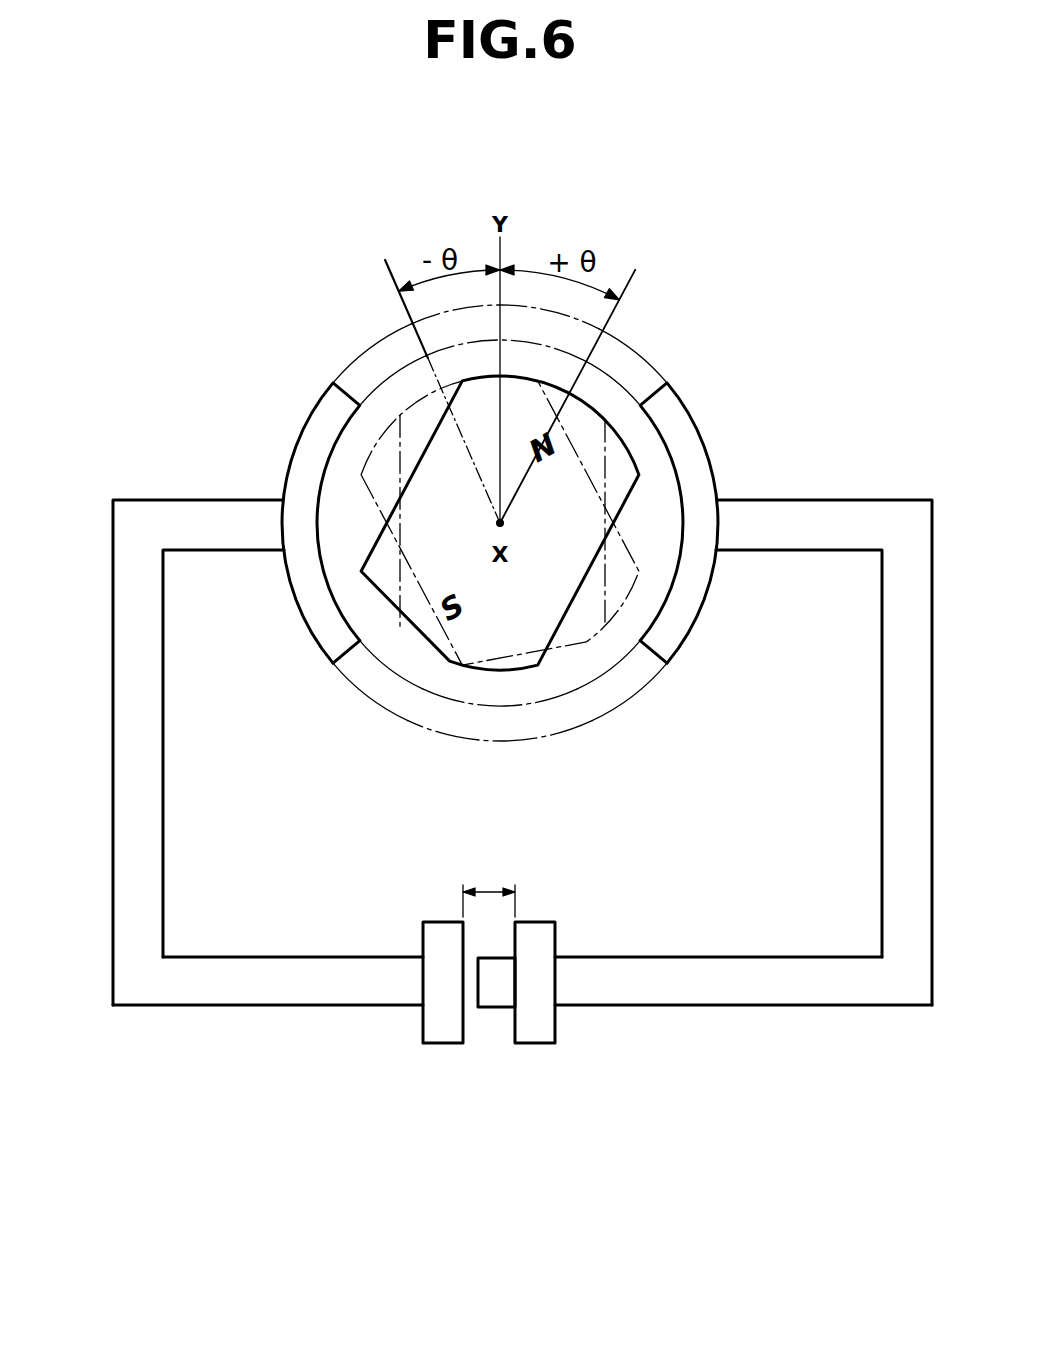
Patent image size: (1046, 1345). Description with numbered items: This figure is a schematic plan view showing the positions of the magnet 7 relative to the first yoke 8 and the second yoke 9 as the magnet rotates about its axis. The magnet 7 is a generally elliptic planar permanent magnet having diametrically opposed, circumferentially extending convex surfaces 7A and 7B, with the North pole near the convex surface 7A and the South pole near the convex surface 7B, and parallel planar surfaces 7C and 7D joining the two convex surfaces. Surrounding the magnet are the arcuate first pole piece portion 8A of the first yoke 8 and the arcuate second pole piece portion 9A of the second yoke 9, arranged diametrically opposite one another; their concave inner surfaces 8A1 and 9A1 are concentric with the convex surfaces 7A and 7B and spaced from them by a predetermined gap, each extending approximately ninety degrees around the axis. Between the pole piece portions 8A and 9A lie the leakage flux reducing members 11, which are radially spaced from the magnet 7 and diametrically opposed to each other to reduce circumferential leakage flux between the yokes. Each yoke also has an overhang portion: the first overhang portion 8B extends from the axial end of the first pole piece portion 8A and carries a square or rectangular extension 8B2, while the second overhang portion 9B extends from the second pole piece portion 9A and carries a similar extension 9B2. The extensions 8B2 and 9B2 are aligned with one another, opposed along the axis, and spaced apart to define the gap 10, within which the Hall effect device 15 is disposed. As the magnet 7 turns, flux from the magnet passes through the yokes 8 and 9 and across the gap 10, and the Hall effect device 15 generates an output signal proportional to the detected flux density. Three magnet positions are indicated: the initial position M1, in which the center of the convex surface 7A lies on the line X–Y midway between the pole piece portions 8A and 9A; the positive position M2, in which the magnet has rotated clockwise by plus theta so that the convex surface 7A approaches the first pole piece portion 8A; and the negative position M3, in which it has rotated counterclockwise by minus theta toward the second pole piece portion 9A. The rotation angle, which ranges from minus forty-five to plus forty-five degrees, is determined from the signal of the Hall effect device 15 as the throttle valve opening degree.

The magnet 7 is at (520, 650).
The convex surface 7A is at (607, 383).
The convex surface 7B is at (413, 650).
The planar surface 7C is at (577, 600).
The planar surface 7D is at (370, 383).
The first yoke 8 is at (878, 500).
The first pole piece portion 8A is at (680, 440).
The concave inner surface 8A1 is at (660, 565).
The first overhang portion 8B is at (697, 985).
The extension 8B2 is at (532, 1025).
The second yoke 9 is at (133, 500).
The second pole piece portion 9A is at (312, 430).
The concave inner surface 9A1 is at (345, 618).
The second overhang portion 9B is at (270, 985).
The extension 9B2 is at (440, 1028).
The gap 10 is at (507, 890).
The leakage flux reducing member 11 is at (387, 336).
The Hall effect device 15 is at (495, 995).
The initial position M1 is at (610, 445).
The positive position M2 is at (632, 500).
The negative position M3 is at (372, 488).